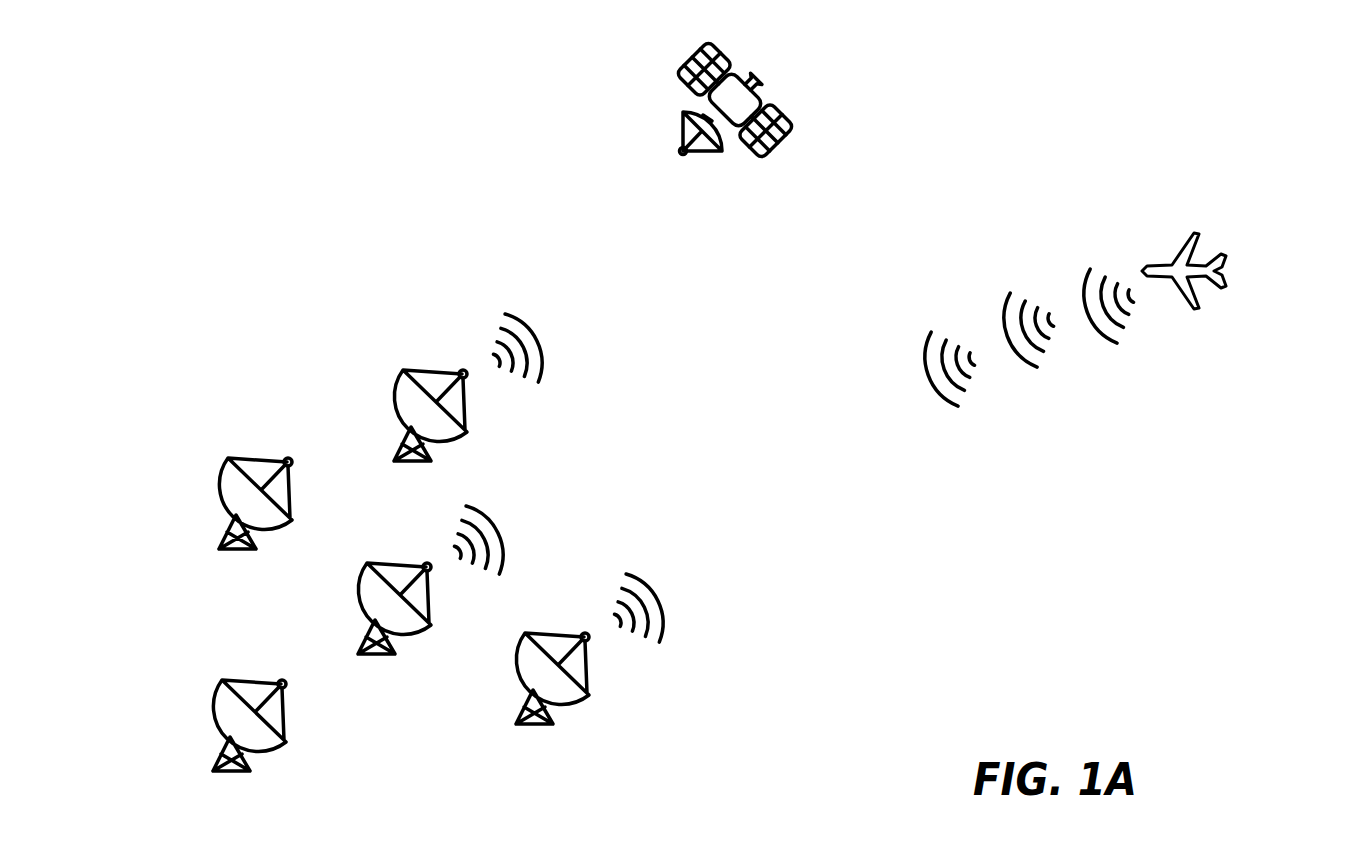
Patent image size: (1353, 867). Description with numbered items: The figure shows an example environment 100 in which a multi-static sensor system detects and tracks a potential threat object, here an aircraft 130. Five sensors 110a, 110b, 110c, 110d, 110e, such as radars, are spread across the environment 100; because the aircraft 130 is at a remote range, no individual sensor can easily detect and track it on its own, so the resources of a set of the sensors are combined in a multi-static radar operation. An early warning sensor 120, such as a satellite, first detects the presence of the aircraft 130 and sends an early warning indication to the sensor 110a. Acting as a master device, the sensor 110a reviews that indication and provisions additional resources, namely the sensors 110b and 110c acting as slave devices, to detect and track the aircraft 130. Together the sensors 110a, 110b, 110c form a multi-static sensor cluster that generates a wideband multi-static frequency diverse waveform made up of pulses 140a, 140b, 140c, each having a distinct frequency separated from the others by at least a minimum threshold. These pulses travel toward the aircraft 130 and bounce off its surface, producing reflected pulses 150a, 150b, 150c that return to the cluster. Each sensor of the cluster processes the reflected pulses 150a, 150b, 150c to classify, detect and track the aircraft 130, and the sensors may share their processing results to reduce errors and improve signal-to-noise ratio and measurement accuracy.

The environment 100 is at (263, 148).
The sensor 110a is at (400, 372).
The sensor 110b is at (417, 633).
The sensor 110c is at (575, 703).
The sensor 110d is at (225, 468).
The sensor 110e is at (215, 690).
The early warning sensor 120 is at (762, 93).
The aircraft 130 is at (1207, 297).
The pulse 140a is at (537, 333).
The pulse 140b is at (502, 528).
The pulse 140c is at (658, 597).
The reflected pulse 150a is at (918, 344).
The reflected pulse 150b is at (995, 305).
The reflected pulse 150c is at (1078, 282).